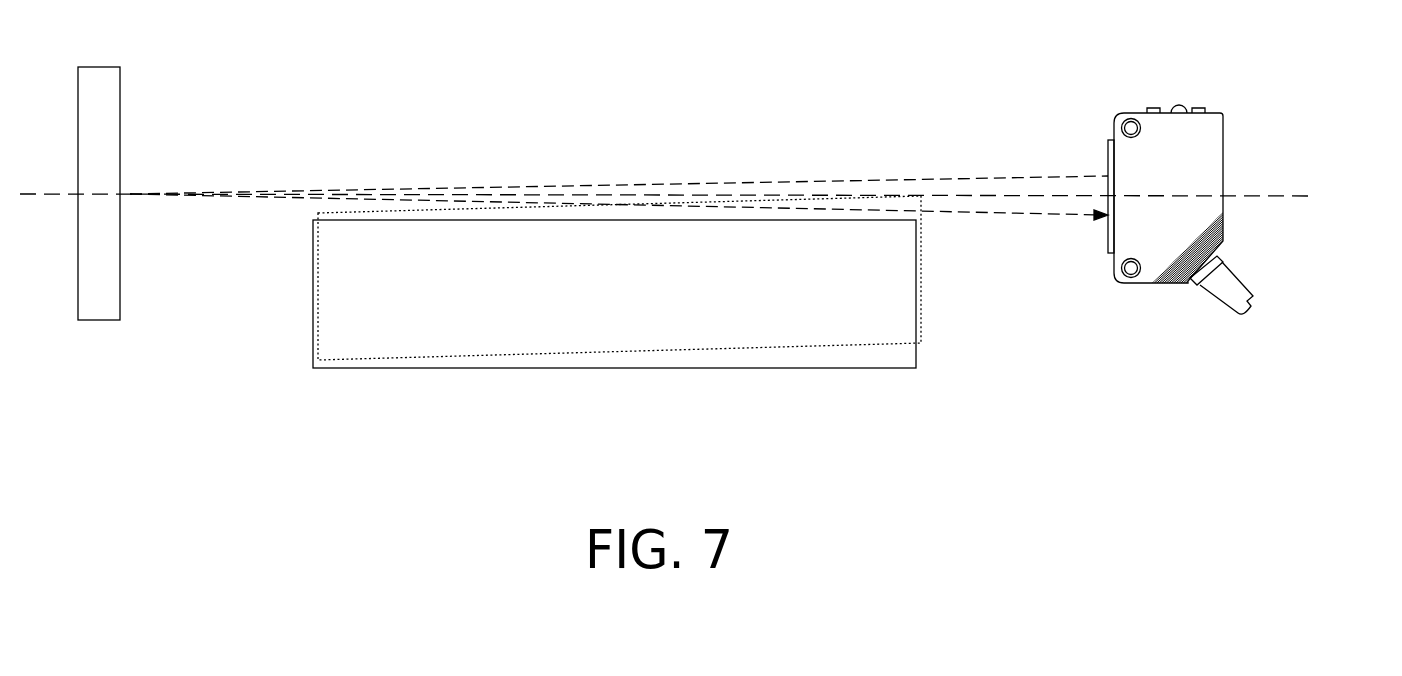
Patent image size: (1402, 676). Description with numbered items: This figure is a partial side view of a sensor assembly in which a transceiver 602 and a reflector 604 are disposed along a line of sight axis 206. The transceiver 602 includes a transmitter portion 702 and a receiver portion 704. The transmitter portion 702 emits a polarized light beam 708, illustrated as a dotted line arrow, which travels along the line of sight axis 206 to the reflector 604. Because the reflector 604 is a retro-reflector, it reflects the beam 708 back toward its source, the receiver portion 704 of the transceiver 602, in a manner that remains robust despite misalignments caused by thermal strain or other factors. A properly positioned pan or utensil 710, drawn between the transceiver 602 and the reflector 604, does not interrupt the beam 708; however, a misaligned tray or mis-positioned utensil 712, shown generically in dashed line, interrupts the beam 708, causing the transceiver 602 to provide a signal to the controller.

The line of sight axis 206 is at (1285, 197).
The transceiver 602 is at (1213, 152).
The reflector 604 is at (107, 120).
The transmitter portion 702 is at (1108, 157).
The receiver portion 704 is at (1110, 230).
The light beam 708 is at (978, 177).
The pan or utensil 710 is at (898, 360).
The misaligned tray or mis-positioned utensil 712 is at (920, 318).